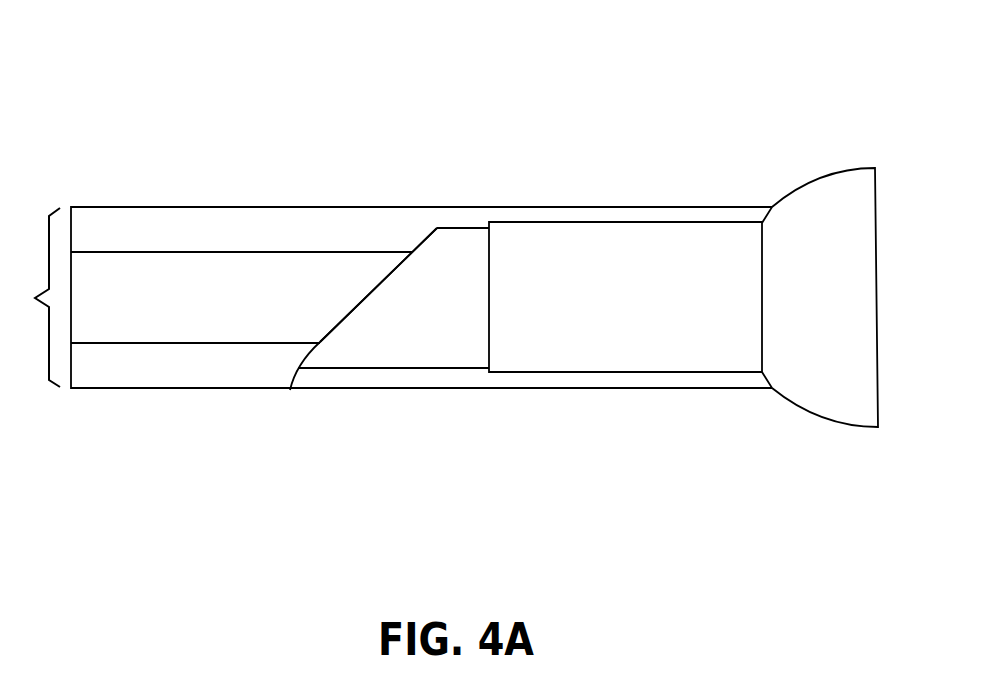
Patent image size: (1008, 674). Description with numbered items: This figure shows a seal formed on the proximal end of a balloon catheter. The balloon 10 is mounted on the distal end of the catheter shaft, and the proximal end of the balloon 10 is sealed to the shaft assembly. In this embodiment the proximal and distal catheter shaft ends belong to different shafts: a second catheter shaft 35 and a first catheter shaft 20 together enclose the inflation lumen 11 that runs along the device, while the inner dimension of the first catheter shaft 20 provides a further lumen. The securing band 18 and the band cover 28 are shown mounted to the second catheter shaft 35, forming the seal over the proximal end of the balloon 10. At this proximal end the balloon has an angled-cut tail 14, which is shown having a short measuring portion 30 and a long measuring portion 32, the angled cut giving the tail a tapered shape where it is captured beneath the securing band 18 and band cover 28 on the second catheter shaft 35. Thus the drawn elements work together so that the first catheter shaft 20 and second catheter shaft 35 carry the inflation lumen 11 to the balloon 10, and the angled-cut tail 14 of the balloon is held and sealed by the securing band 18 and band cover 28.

The balloon 10 is at (842, 187).
The inflation lumen 11 is at (93, 233).
The angled-cut tail 14 is at (430, 325).
The securing band 18 is at (632, 245).
The first catheter shaft 20 is at (114, 350).
The band cover 28 is at (663, 382).
The short measuring portion 30 is at (443, 228).
The long measuring portion 32 is at (290, 390).
The second catheter shaft 35 is at (262, 208).